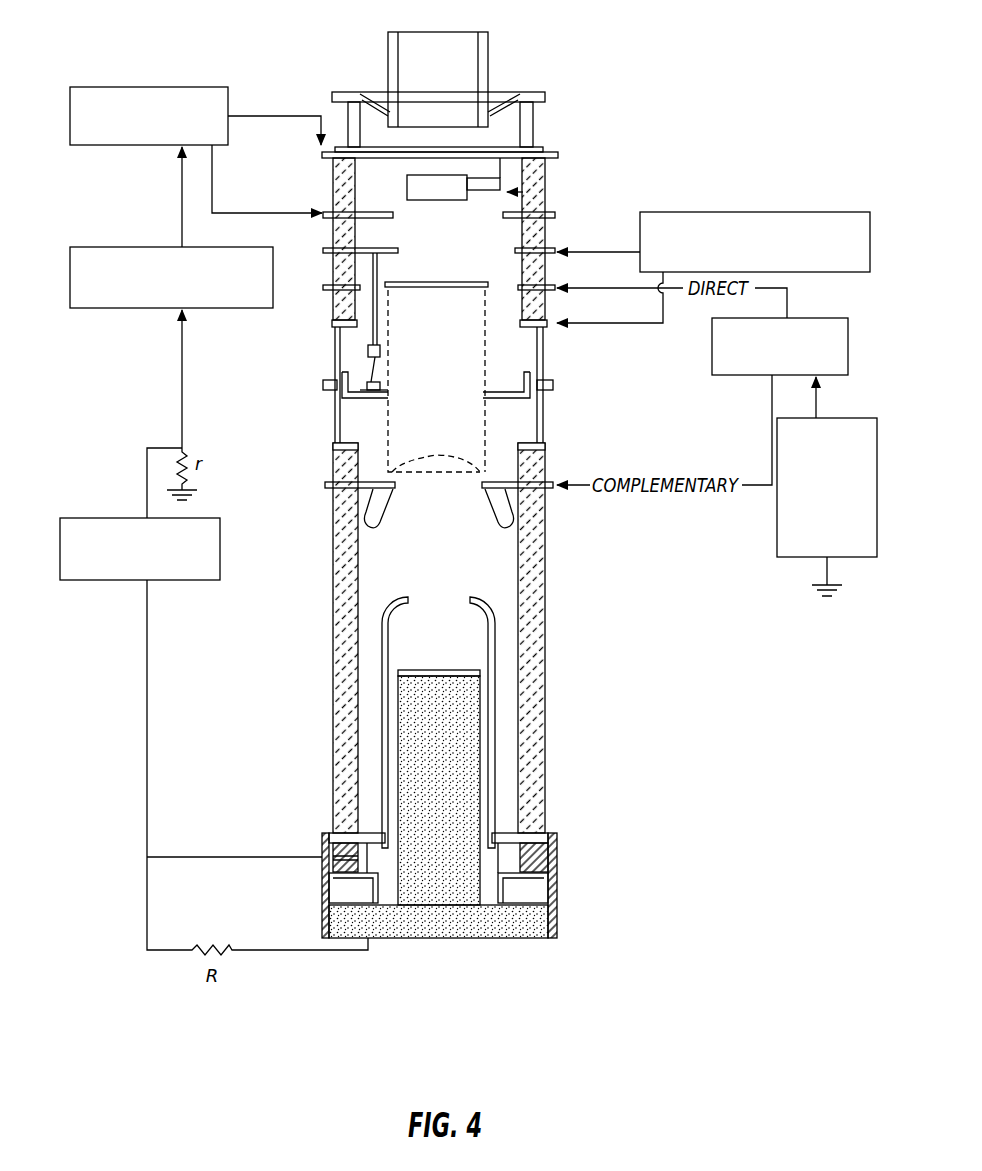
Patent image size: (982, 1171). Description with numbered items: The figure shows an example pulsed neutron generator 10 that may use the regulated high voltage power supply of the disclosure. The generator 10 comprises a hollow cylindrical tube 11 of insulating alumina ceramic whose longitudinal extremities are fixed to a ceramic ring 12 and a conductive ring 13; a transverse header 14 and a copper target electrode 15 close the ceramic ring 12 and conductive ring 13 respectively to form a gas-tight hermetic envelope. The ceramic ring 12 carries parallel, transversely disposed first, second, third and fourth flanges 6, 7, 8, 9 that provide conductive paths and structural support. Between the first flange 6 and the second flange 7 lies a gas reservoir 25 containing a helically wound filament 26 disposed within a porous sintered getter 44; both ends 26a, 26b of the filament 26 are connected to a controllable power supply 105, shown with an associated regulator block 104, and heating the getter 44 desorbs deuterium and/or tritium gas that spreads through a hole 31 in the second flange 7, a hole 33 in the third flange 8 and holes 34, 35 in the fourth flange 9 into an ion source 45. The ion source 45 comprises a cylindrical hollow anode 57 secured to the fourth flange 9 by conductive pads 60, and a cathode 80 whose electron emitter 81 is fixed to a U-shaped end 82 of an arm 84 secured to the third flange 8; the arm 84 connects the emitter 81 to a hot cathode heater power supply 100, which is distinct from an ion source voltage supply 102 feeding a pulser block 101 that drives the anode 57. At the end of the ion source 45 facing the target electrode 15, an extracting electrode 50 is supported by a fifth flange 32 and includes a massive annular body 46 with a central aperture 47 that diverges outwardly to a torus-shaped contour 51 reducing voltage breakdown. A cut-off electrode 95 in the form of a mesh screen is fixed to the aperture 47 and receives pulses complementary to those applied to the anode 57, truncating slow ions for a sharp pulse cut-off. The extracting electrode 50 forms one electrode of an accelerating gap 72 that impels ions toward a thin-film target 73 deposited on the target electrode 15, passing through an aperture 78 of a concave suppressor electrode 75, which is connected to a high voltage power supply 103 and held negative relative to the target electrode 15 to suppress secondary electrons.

The neutron generator 10 is at (580, 68).
The hollow cylindrical tube 11 is at (550, 579).
The ceramic ring 12 is at (525, 206).
The conductive ring 13 is at (557, 865).
The transverse header 14 is at (548, 128).
The target electrode 15 is at (410, 772).
The first flange 6 is at (560, 153).
The second flange 7 is at (557, 215).
The third flange 8 is at (322, 250).
The fourth flange 9 is at (323, 288).
The gas reservoir 25 is at (535, 201).
The helically wound filament 26 is at (505, 177).
The filament end 26a is at (500, 167).
The filament end 26b is at (337, 194).
The hole 31 is at (408, 214).
The fifth flange 32 is at (330, 483).
The hole 33 is at (462, 250).
The hole 34 is at (503, 286).
The hole 35 is at (367, 292).
The getter 44 is at (400, 181).
The ion source 45 is at (560, 347).
The annular body 46 is at (500, 500).
The central aperture 47 is at (443, 483).
The extracting electrode 50 is at (379, 491).
The torus-shaped contour 51 is at (510, 522).
The hollow anode 57 is at (486, 446).
The conductive pads 60 is at (392, 297).
The accelerating gap 72 is at (442, 542).
The target 73 is at (447, 668).
The suppressor electrode 75 is at (382, 712).
The aperture 78 is at (437, 597).
The cathode 80 is at (368, 350).
The electron emitter 81 is at (385, 388).
The U-shaped end 82 is at (368, 402).
The arm 84 is at (372, 332).
The cut-off electrode 95 is at (425, 452).
The hot cathode heater power supply 100 is at (762, 212).
The ion source pulser 101 is at (810, 318).
The ion source voltage supply 102 is at (840, 418).
The high voltage power supply 103 is at (95, 518).
The gas supply means regulator 104 is at (108, 308).
The controllable power supply 105 is at (97, 87).